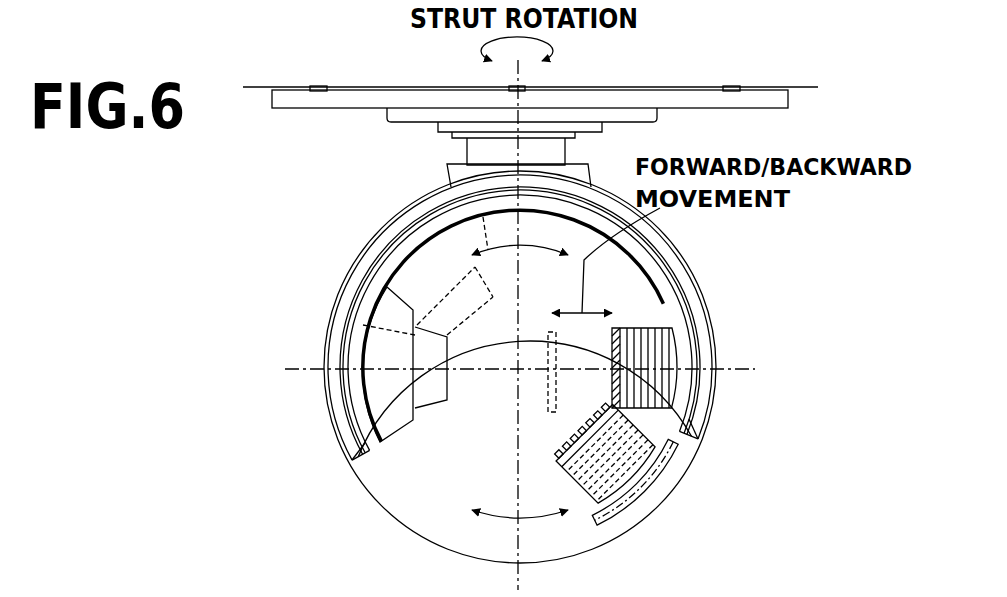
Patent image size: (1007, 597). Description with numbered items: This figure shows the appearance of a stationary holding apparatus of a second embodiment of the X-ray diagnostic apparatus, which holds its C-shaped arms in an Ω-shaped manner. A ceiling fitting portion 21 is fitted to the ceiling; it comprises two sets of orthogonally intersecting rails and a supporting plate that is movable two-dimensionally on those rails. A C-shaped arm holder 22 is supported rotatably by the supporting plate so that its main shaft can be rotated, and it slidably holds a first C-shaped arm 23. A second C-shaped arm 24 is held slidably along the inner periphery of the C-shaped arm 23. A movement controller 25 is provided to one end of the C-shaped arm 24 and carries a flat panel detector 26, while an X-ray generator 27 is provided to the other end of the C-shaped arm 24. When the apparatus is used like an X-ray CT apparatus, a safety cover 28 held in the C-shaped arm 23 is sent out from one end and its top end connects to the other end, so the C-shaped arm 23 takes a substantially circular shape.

The ceiling fitting portion 21 is at (585, 96).
The C-shaped arm holder 22 is at (557, 152).
The C-shaped arm 23 is at (652, 240).
The C-shaped arm 24 is at (658, 273).
The movement controller 25 is at (655, 345).
The flat panel detector 26 is at (630, 327).
The X-ray generator 27 is at (458, 281).
The safety cover 28 is at (632, 523).